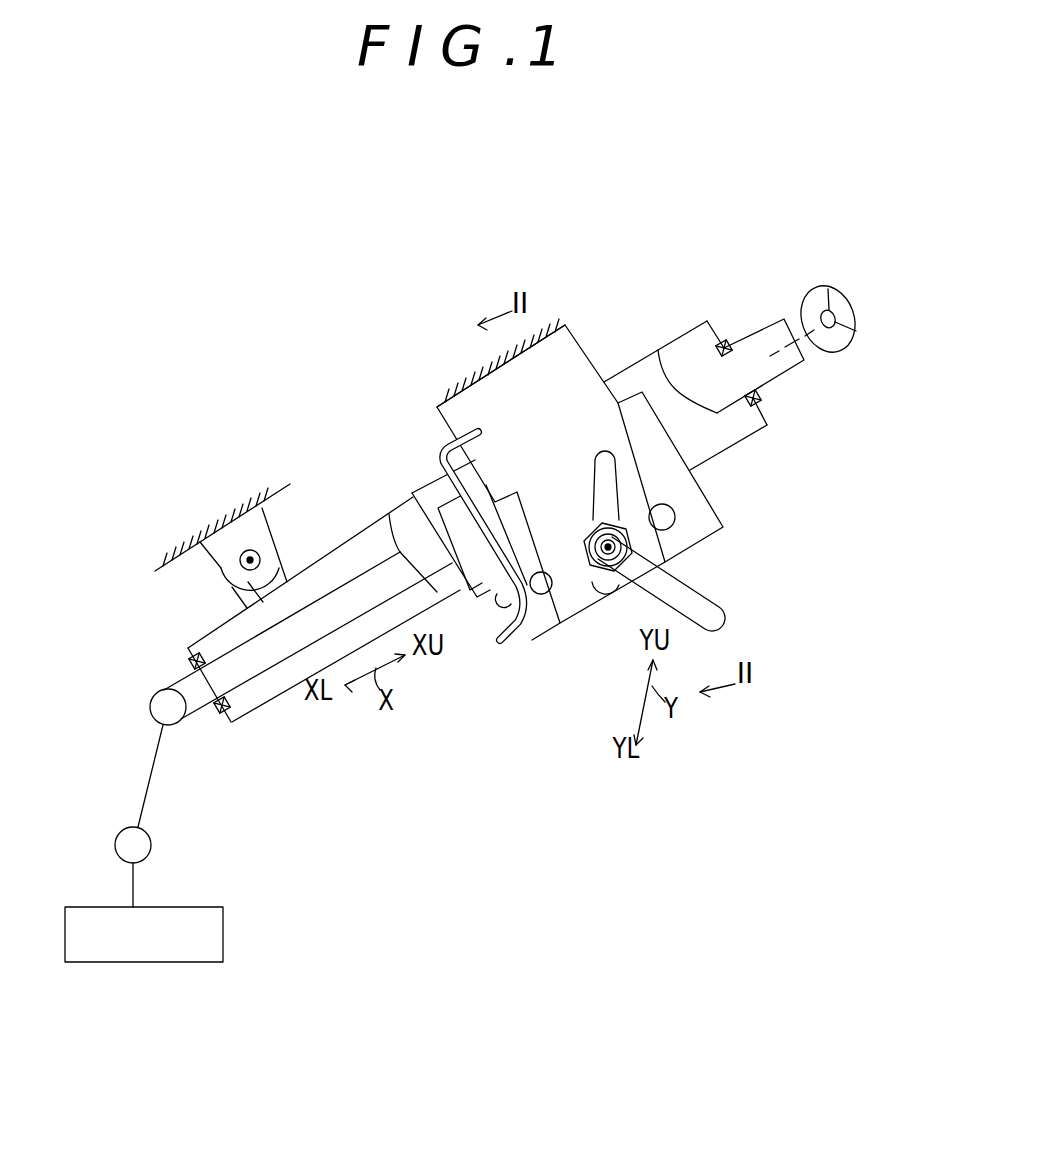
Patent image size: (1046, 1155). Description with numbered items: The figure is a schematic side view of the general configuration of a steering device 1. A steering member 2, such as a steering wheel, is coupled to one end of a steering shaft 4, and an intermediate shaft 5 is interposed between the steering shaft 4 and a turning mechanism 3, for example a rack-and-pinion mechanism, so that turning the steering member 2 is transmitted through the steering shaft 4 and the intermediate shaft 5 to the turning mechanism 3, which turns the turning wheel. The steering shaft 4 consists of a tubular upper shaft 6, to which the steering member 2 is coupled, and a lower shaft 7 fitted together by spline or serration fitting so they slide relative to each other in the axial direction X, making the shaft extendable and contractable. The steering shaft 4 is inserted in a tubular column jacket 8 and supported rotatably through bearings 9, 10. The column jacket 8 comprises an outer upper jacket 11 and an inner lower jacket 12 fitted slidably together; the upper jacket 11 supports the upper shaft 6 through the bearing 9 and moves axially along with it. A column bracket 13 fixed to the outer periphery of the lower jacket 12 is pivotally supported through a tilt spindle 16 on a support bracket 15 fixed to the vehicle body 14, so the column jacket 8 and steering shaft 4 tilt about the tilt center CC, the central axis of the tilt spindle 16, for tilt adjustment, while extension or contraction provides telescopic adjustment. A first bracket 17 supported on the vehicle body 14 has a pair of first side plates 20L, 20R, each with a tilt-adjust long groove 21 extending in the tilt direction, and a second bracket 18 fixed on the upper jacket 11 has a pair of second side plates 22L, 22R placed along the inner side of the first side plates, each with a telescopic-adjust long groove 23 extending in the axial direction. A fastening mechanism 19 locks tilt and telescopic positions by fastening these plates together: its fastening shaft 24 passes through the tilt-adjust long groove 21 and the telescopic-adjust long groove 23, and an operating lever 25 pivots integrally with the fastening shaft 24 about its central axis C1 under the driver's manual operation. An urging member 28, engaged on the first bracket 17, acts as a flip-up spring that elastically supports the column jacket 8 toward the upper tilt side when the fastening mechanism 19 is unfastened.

The steering device 1 is at (500, 500).
The steering member 2 is at (828, 291).
The turning mechanism 3 is at (170, 934).
The steering shaft 4 is at (733, 315).
The intermediate shaft 5 is at (156, 798).
The upper shaft 6 is at (771, 369).
The lower shaft 7 is at (308, 649).
The column jacket 8 is at (738, 454).
The bearing 9 is at (776, 420).
The bearing 10 is at (209, 716).
The upper jacket 11 is at (685, 384).
The lower jacket 12 is at (324, 597).
The column bracket 13 is at (221, 606).
The vehicle body 14 is at (357, 445).
The support bracket 15 is at (218, 555).
The tilt spindle 16 is at (283, 532).
The first bracket 17 is at (401, 424).
The second bracket 18 is at (703, 477).
The fastening mechanism 19 is at (675, 547).
The first side plate 20L is at (551, 540).
The first side plate 20R is at (565, 738).
The tilt-adjust long groove 21 is at (590, 464).
The second side plate 22L is at (461, 592).
The second side plate 22R is at (472, 708).
The telescopic-adjust long groove 23 is at (496, 591).
The fastening shaft 24 is at (600, 635).
The operating lever 25 is at (693, 588).
The urging member 28 is at (446, 536).
The tilt center CC is at (293, 546).
The central axis C1 is at (635, 489).